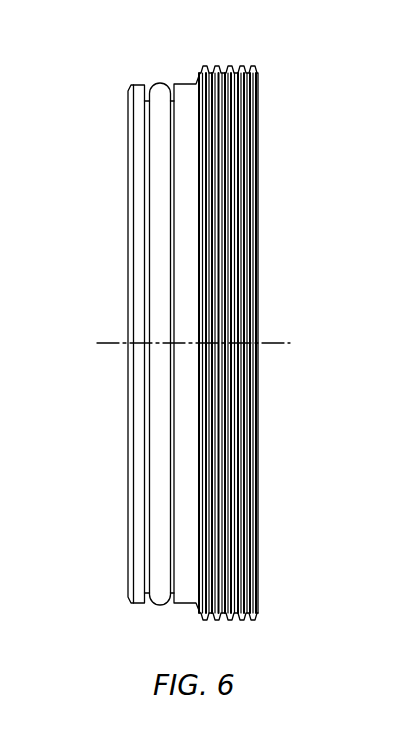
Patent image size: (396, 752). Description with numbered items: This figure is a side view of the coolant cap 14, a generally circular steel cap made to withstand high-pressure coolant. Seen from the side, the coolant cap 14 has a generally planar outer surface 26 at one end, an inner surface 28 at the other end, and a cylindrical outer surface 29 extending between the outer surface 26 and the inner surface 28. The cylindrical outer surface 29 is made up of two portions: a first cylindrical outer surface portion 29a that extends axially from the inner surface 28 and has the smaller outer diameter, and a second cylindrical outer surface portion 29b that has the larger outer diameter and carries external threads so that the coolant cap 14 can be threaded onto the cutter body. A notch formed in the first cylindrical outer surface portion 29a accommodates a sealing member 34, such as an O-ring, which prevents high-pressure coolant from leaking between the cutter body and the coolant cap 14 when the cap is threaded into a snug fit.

The coolant cap 14 is at (68, 108).
The outer surface 26 is at (266, 218).
The inner surface 28 is at (122, 218).
The cylindrical outer surface 29 is at (183, 50).
The first cylindrical outer surface portion 29a is at (140, 83).
The second cylindrical outer surface portion 29b is at (230, 66).
The sealing member 34 is at (158, 82).